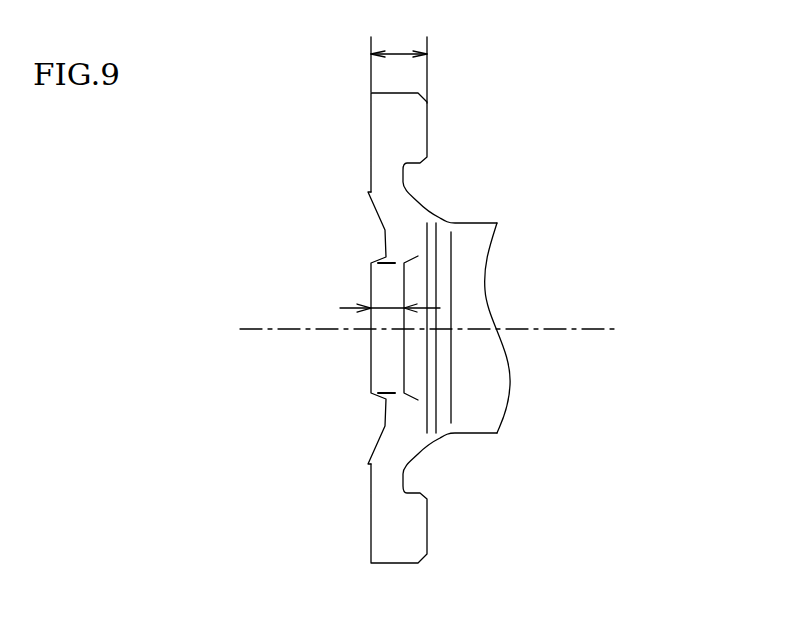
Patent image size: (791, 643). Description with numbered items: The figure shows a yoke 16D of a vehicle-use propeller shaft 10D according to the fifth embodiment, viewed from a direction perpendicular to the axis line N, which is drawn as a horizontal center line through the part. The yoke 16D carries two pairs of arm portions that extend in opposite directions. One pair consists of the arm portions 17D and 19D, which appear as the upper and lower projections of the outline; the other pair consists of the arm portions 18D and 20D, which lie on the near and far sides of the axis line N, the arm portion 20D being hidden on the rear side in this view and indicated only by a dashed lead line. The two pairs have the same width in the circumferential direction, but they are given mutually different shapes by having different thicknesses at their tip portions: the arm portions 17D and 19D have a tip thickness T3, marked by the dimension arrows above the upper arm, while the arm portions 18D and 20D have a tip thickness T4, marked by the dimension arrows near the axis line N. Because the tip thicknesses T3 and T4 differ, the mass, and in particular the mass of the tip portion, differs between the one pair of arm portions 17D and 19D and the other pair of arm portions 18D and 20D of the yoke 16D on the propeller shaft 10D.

The yoke 16D is at (562, 265).
The propeller shaft 10D is at (468, 328).
The arm portion 17D is at (427, 127).
The arm portion 18D is at (378, 368).
The arm portion 19D is at (427, 533).
The arm portion 20D is at (380, 288).
The axis line N is at (598, 328).
The thickness T3 is at (399, 54).
The thickness T4 is at (368, 305).